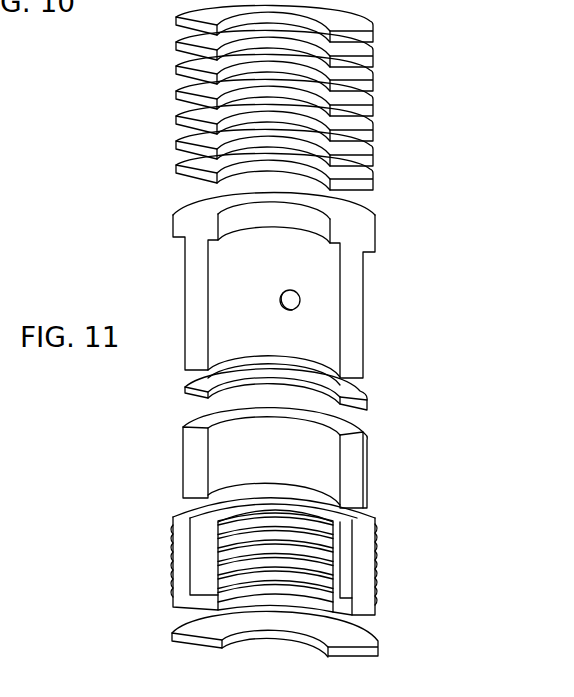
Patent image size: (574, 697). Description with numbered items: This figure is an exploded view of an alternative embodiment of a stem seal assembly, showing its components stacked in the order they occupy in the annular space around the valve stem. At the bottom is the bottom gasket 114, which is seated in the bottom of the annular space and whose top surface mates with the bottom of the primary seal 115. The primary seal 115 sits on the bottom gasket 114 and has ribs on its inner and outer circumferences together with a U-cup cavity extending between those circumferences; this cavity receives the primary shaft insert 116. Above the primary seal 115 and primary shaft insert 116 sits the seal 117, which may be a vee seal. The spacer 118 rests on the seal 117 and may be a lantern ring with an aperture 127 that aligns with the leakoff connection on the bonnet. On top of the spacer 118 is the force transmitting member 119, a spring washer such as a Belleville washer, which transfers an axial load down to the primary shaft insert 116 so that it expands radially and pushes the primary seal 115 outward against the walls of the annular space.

The bottom gasket 114 is at (358, 641).
The primary seal 115 is at (368, 568).
The primary shaft insert 116 is at (355, 465).
The seal 117 is at (350, 395).
The spacer 118 is at (350, 303).
The force transmitting member 119 is at (375, 0).
The aperture 127 is at (306, 289).